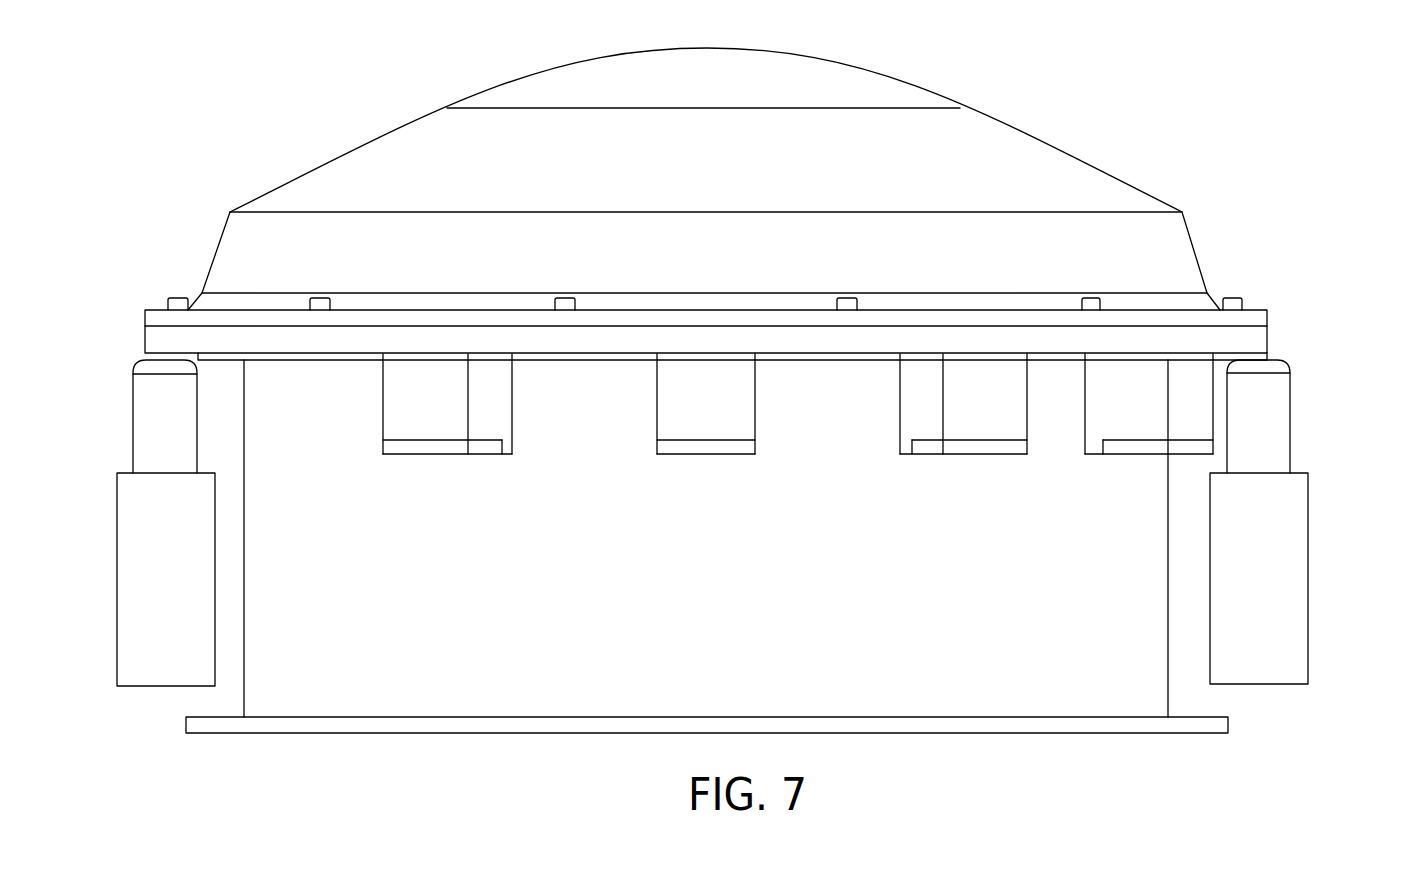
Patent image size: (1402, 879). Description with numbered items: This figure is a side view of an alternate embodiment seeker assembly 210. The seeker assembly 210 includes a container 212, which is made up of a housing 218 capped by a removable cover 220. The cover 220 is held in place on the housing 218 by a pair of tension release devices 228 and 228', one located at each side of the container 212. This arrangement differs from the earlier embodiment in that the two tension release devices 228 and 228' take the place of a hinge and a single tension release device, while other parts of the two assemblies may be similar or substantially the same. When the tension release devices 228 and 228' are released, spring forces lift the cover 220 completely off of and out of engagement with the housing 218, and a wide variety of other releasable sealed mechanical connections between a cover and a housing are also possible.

The seeker assembly 210 is at (194, 150).
The container 212 is at (168, 254).
The housing 218 is at (308, 686).
The removable cover 220 is at (362, 167).
The tension release device 228 is at (137, 523).
The tension release device 228' is at (1291, 522).